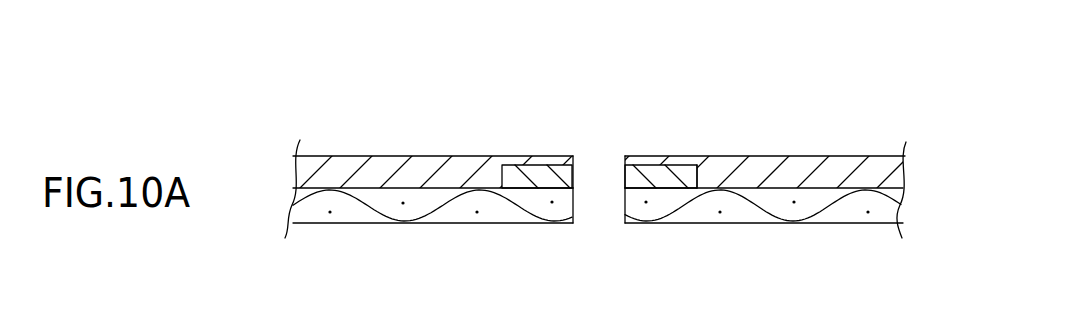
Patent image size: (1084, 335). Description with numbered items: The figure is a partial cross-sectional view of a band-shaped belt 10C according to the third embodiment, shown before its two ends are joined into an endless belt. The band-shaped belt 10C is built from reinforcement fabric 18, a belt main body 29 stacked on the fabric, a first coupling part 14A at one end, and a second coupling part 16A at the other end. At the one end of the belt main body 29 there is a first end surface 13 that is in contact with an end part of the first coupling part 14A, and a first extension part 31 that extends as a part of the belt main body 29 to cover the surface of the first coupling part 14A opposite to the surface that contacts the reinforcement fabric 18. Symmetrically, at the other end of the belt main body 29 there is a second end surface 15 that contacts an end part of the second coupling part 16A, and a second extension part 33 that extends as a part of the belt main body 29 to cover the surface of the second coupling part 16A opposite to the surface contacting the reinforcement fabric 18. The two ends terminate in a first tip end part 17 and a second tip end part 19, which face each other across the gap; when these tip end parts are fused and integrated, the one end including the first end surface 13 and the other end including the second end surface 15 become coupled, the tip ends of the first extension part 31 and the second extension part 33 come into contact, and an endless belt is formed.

The band-shaped belt 10C is at (773, 116).
The first end surface 13 is at (505, 170).
The first coupling part 14A is at (538, 177).
The second end surface 15 is at (688, 172).
The second coupling part 16A is at (653, 177).
The first tip end part 17 is at (576, 174).
The reinforcement fabric 18 is at (845, 213).
The second tip end part 19 is at (624, 174).
The belt main body 29 is at (836, 175).
The first extension part 31 is at (562, 167).
The second extension part 33 is at (632, 170).